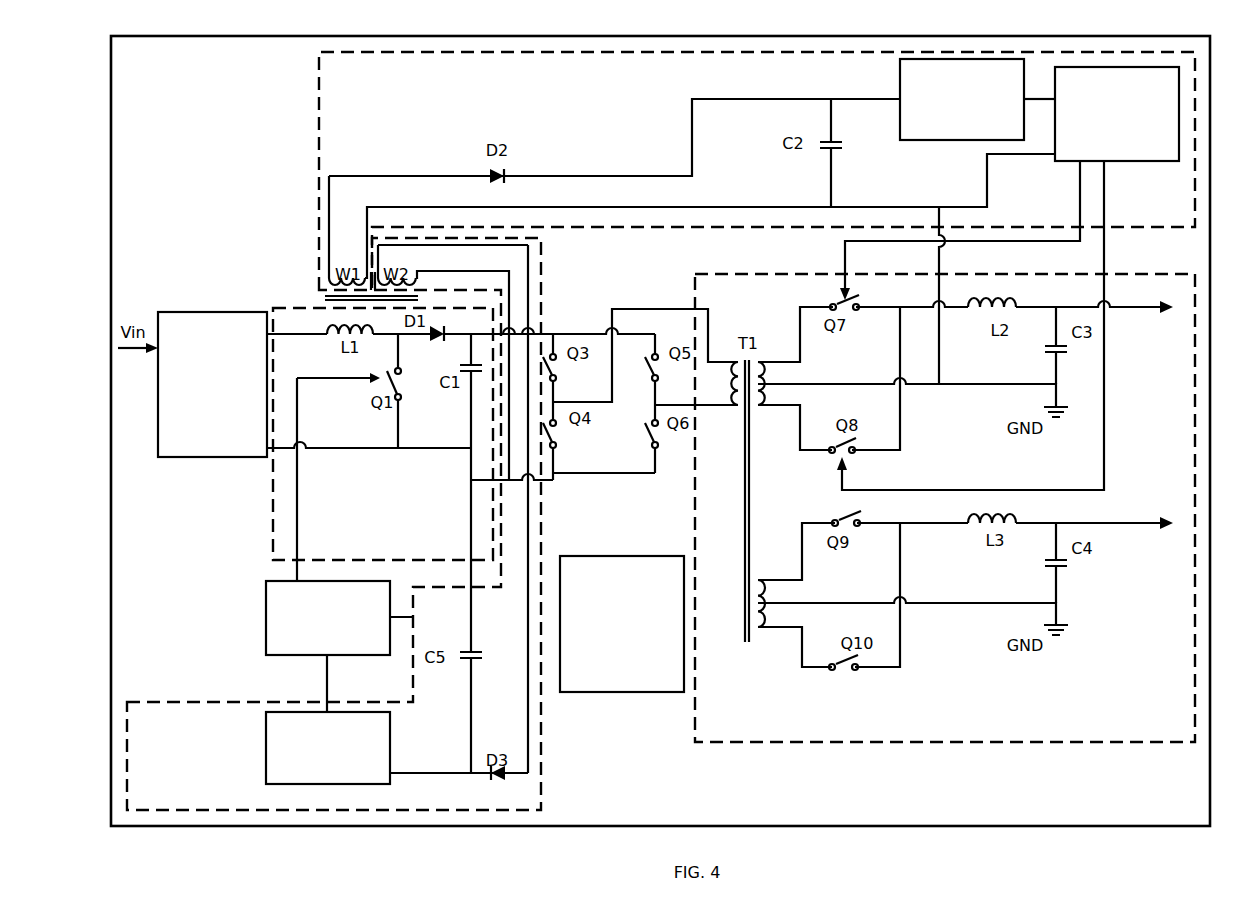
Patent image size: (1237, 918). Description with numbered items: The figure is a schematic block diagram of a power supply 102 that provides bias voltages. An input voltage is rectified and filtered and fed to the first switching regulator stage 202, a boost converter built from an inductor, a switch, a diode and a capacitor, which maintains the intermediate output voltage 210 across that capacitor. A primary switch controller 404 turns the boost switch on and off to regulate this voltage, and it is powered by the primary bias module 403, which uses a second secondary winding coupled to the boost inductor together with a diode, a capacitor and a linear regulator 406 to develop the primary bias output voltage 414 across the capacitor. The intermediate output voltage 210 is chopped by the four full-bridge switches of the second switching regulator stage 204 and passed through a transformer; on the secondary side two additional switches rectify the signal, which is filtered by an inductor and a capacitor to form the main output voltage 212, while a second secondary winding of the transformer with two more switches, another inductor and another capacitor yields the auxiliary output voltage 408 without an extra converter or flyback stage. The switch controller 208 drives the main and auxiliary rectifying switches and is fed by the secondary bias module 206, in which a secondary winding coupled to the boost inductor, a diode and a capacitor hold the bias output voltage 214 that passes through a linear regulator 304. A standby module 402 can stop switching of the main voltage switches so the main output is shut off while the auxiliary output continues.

The power supply 102 is at (660, 431).
The first switching regulator stage 202 is at (325, 434).
The second switching regulator stage 204 is at (945, 508).
The secondary bias module 206 is at (757, 171).
The switch controller 208 is at (1117, 114).
The intermediate output voltage 210 is at (478, 333).
The main output voltage 212 is at (1137, 307).
The bias output voltage 214 is at (815, 99).
The linear regulator 304 is at (962, 99).
The standby module 402 is at (622, 624).
The primary bias module 403 is at (334, 524).
The primary switch controller 404 is at (328, 618).
The linear regulator 406 is at (328, 748).
The auxiliary output voltage 408 is at (1137, 523).
The primary bias output voltage 414 is at (420, 772).